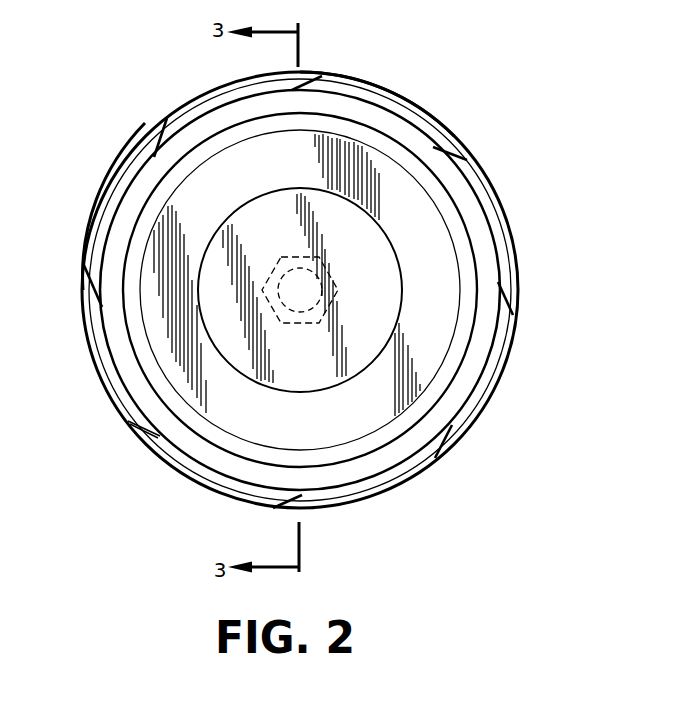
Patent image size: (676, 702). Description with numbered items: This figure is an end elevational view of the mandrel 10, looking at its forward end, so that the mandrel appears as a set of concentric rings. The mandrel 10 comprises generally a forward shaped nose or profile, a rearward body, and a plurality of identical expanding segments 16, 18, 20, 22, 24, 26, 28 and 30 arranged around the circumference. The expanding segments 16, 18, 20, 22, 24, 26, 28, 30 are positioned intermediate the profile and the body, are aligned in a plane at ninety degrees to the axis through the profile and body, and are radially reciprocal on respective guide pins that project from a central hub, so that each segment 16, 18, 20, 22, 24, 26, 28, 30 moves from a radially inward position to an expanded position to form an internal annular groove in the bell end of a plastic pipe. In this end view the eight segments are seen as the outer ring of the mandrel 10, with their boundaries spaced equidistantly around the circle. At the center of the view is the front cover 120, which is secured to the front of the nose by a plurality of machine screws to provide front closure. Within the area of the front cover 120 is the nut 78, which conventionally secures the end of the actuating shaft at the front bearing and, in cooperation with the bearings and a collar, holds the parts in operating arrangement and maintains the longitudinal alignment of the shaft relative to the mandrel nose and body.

The mandrel 10 is at (527, 285).
The expanding segment 16 is at (192, 107).
The expanding segment 18 is at (385, 97).
The expanding segment 20 is at (500, 228).
The expanding segment 22 is at (492, 387).
The expanding segment 24 is at (372, 492).
The expanding segment 26 is at (190, 476).
The expanding segment 28 is at (96, 350).
The expanding segment 30 is at (113, 193).
The front cover 120 is at (385, 277).
The nut 78 is at (338, 322).